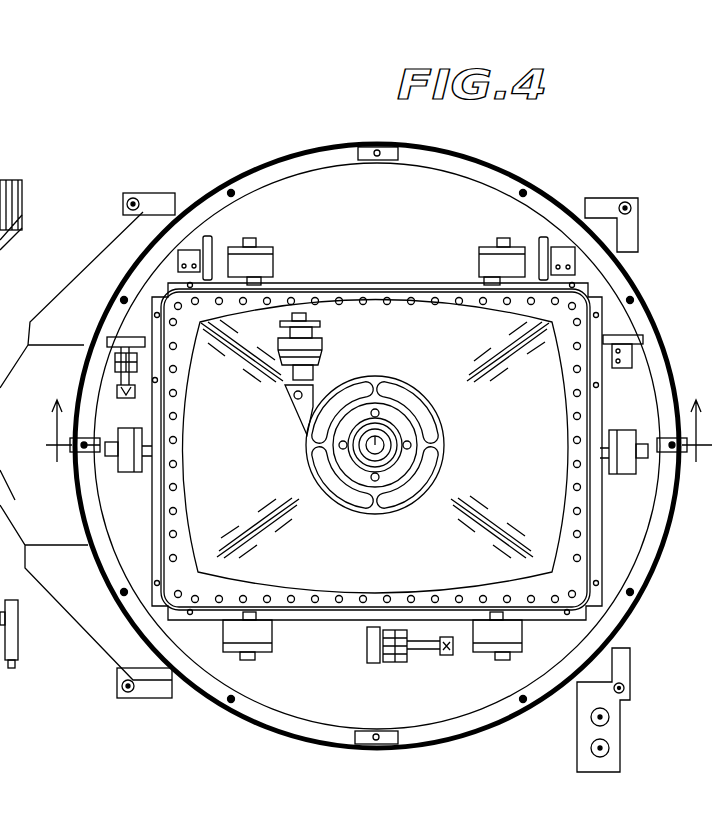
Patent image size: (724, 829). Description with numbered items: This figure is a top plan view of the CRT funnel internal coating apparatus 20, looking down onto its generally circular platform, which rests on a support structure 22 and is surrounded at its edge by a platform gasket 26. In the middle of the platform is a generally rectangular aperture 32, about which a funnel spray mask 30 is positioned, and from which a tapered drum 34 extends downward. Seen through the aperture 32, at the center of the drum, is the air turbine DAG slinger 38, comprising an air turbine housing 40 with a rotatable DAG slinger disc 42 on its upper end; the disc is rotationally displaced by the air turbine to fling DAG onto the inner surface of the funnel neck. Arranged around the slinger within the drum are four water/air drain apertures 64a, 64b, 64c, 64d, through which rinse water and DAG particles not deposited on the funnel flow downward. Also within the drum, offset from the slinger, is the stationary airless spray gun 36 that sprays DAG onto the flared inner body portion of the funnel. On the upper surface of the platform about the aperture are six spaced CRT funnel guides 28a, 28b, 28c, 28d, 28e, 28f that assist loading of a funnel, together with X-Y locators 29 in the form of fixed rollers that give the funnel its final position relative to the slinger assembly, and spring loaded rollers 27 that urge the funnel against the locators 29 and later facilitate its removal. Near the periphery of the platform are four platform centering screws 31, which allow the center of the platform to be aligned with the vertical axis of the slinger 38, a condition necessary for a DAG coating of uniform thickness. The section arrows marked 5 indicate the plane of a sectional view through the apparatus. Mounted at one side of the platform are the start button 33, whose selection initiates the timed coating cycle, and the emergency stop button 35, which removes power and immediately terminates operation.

The CRT funnel internal coating apparatus 20 is at (292, 75).
The platform gasket 26 is at (324, 158).
The platform centering screws 31 is at (384, 116).
The section line 5- 5 is at (376, 450).
The funnel spray mask 30 is at (330, 285).
The aperture 32 is at (398, 292).
The tapered drum 34 is at (540, 468).
The air turbine housing 40 is at (445, 445).
The DAG slinger disc 42 is at (376, 440).
The water/air drain aperture 64a is at (341, 495).
The water/air drain aperture 64b is at (320, 430).
The water/air drain aperture 64c is at (412, 405).
The water/air drain aperture 64d is at (410, 498).
The stationary airless spray gun 36 is at (322, 345).
The air turbine DAG slinger 38 is at (314, 458).
The CRT funnel guide 28a is at (490, 645).
The CRT funnel guide 28b is at (264, 645).
The CRT funnel guide 28c is at (132, 475).
The CRT funnel guide 28d is at (276, 250).
The CRT funnel guide 28e is at (490, 245).
The CRT funnel guide 28f is at (624, 475).
The X-Y locators 29 is at (210, 238).
The spring loaded rollers 27 is at (104, 340).
The start button 33 is at (610, 748).
The emergency stop button 35 is at (610, 717).
The support structure 22 is at (0, 815).